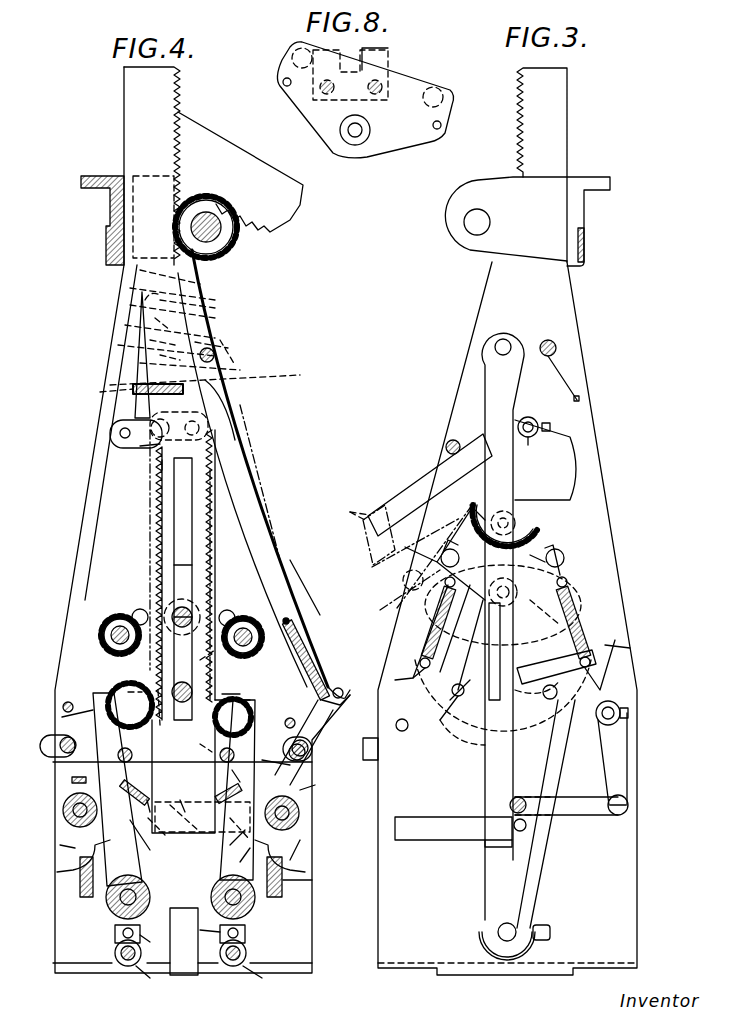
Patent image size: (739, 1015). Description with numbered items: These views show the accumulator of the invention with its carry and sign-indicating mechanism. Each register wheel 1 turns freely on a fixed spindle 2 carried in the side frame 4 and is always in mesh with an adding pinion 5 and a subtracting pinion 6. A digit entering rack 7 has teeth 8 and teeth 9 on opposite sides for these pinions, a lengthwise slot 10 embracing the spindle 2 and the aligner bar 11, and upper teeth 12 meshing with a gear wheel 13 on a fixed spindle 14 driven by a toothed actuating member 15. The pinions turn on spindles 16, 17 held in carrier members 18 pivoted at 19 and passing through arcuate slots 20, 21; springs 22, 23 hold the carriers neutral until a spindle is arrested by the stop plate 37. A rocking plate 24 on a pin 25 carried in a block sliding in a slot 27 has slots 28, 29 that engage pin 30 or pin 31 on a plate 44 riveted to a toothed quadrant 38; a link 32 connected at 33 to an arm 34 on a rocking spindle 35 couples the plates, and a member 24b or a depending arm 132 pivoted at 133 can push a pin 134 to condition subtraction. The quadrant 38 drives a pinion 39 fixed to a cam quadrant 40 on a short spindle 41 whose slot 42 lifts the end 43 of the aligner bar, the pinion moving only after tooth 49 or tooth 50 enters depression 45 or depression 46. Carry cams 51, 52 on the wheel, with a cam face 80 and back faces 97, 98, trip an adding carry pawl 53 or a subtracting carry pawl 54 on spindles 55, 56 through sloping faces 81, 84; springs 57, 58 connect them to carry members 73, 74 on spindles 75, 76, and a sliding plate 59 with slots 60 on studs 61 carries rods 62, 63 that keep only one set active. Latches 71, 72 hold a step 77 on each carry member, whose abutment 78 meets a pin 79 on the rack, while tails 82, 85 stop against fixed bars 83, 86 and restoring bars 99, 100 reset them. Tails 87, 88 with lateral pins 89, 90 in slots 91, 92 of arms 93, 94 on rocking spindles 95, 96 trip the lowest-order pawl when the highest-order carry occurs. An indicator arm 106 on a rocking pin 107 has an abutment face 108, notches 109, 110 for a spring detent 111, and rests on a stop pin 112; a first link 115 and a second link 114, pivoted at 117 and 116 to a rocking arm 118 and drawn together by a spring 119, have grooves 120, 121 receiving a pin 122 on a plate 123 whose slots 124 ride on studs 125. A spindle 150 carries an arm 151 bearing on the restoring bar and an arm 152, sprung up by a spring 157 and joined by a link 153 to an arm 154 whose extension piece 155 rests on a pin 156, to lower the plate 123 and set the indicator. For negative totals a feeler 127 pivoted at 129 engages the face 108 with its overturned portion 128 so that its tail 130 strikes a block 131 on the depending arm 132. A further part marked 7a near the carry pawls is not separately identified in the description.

In FIG. 4, the pin 1 is at (230, 691).
In FIG. 4, the pin 2 is at (188, 701).
In FIG. 4, the lever 4 is at (240, 511).
In FIG. 3, the lever 4 is at (590, 486).
In FIG. 4, the gear 5 is at (262, 638).
In FIG. 4, the gear 6 is at (112, 626).
In FIG. 4, the bracket 7 is at (165, 469).
In FIG. 3, the bracket 7 is at (530, 169).
In FIG. 4, the spring 7a is at (238, 795).
In FIG. 4, the rack 8 is at (216, 487).
In FIG. 4, the rack 9 is at (155, 496).
In FIG. 4, the slide bar 10 is at (180, 517).
In FIG. 4, the pin 11 is at (192, 611).
In FIG. 4, the rack 12 is at (165, 82).
In FIG. 3, the rack 12 is at (520, 73).
In FIG. 4, the shaft 13 is at (212, 242).
In FIG. 4, the gear 14 is at (222, 238).
In FIG. 4, the plate 15 is at (230, 157).
In FIG. 4, the shaft 16 is at (250, 631).
In FIG. 8, the shaft 16 is at (440, 89).
In FIG. 3, the shaft 16 is at (452, 693).
In FIG. 4, the shaft 17 is at (110, 637).
In FIG. 8, the shaft 17 is at (296, 53).
In FIG. 3, the shaft 17 is at (590, 657).
In FIG. 8, the plate 18 is at (318, 127).
In FIG. 3, the plate 18 is at (420, 673).
In FIG. 8, the bushing 19 is at (362, 132).
In FIG. 4, the pawl 20 is at (232, 614).
In FIG. 4, the pawl 21 is at (140, 610).
In FIG. 3, the spring 22 is at (428, 643).
In FIG. 3, the spring 23 is at (575, 609).
In FIG. 3, the lever 24 is at (525, 896).
In FIG. 3, the bar 24b is at (416, 831).
In FIG. 3, the roller 25 is at (498, 934).
In FIG. 4, the stop 27 is at (175, 965).
In FIG. 3, the stop 27 is at (520, 963).
In FIG. 3, the pin 28 is at (558, 693).
In FIG. 3, the cam 29 is at (537, 698).
In FIG. 3, the cam 30 is at (458, 701).
In FIG. 3, the link 31 is at (548, 691).
In FIG. 3, the bar 32 is at (562, 809).
In FIG. 3, the pin 33 is at (618, 816).
In FIG. 3, the link 34 is at (605, 781).
In FIG. 4, the pivot 35 is at (63, 707).
In FIG. 3, the pivot 35 is at (620, 711).
In FIG. 8, the notch 37 is at (385, 51).
In FIG. 3, the pin 38 is at (568, 584).
In FIG. 3, the shaft 39 is at (518, 521).
In FIG. 3, the pawl 40 is at (565, 559).
In FIG. 3, the gear 41 is at (533, 516).
In FIG. 3, the pawl 42 is at (560, 551).
In FIG. 3, the cam 43 is at (540, 623).
In FIG. 3, the pin 44 is at (417, 718).
In FIG. 3, the pawl 45 is at (448, 549).
In FIG. 3, the shaft 46 is at (517, 596).
In FIG. 3, the gear 49 is at (475, 516).
In FIG. 3, the gear 50 is at (546, 546).
In FIG. 4, the pawl 51 is at (164, 694).
In FIG. 4, the gear 52 is at (128, 683).
In FIG. 4, the slot 53 is at (290, 767).
In FIG. 4, the link 54 is at (78, 722).
In FIG. 4, the roller 55 is at (250, 908).
In FIG. 4, the roller 56 is at (110, 908).
In FIG. 4, the pin 57 is at (244, 771).
In FIG. 4, the spring 58 is at (135, 786).
In FIG. 4, the stop 59 is at (321, 794).
In FIG. 3, the stop 59 is at (378, 751).
In FIG. 4, the slot 60 is at (42, 746).
In FIG. 4, the pin 61 is at (65, 739).
In FIG. 4, the pin 62 is at (222, 758).
In FIG. 4, the pin 63 is at (132, 756).
In FIG. 4, the arm 71 is at (238, 866).
In FIG. 4, the arm 72 is at (150, 800).
In FIG. 4, the arm 73 is at (222, 851).
In FIG. 4, the arm 74 is at (140, 851).
In FIG. 4, the arm 75 is at (300, 857).
In FIG. 4, the roller 76 is at (63, 810).
In FIG. 4, the link 77 is at (199, 842).
In FIG. 4, the spring 78 is at (194, 795).
In FIG. 4, the plate 79 is at (180, 835).
In FIG. 4, the pin 80 is at (258, 689).
In FIG. 4, the bar 81 is at (256, 704).
In FIG. 4, the block 82 is at (284, 882).
In FIG. 4, the ledge 83 is at (290, 897).
In FIG. 4, the bar 84 is at (95, 700).
In FIG. 4, the arm 85 is at (65, 853).
In FIG. 4, the block 86 is at (80, 890).
In FIG. 4, the block 87 is at (245, 932).
In FIG. 4, the block 88 is at (115, 930).
In FIG. 4, the pin 89 is at (198, 932).
In FIG. 4, the pin 90 is at (154, 941).
In FIG. 4, the pin 91 is at (238, 937).
In FIG. 4, the pin 92 is at (123, 936).
In FIG. 4, the arm 93 is at (260, 981).
In FIG. 4, the arm 94 is at (148, 981).
In FIG. 4, the roller 95 is at (230, 966).
In FIG. 4, the roller 96 is at (118, 963).
In FIG. 4, the lever 97 is at (305, 728).
In FIG. 4, the gear 98 is at (130, 705).
In FIG. 4, the roller 99 is at (298, 820).
In FIG. 4, the stop 100 is at (72, 781).
In FIG. 3, the bar 106 is at (425, 481).
In FIG. 4, the pin 107 is at (168, 439).
In FIG. 3, the pin 107 is at (529, 449).
In FIG. 3, the bar 108 is at (388, 506).
In FIG. 3, the pivot 109 is at (545, 448).
In FIG. 3, the stop 110 is at (547, 432).
In FIG. 3, the pin 111 is at (556, 351).
In FIG. 3, the pin 112 is at (446, 446).
In FIG. 4, the lever 114 is at (218, 371).
In FIG. 4, the spring 115 is at (133, 383).
In FIG. 4, the link 116 is at (205, 424).
In FIG. 4, the link 117 is at (118, 434).
In FIG. 4, the pin 118 is at (145, 448).
In FIG. 4, the lever 119 is at (138, 396).
In FIG. 4, the lever 120 is at (205, 311).
In FIG. 4, the pin 121 is at (140, 306).
In FIG. 4, the lever 122 is at (140, 284).
In FIG. 4, the pin 123 is at (215, 357).
In FIG. 4, the spring 124 is at (215, 393).
In FIG. 4, the pin 125 is at (214, 297).
In FIG. 3, the axis 127 is at (395, 606).
In FIG. 4, the link 128 is at (341, 508).
In FIG. 3, the link 128 is at (343, 507).
In FIG. 3, the pivot 129 is at (405, 584).
In FIG. 3, the cam 130 is at (475, 731).
In FIG. 3, the slot 131 is at (500, 656).
In FIG. 3, the bar 132 is at (500, 485).
In FIG. 3, the pin 133 is at (508, 341).
In FIG. 3, the pin 134 is at (522, 832).
In FIG. 4, the pin 150 is at (296, 722).
In FIG. 4, the lever 151 is at (306, 752).
In FIG. 4, the pin 152 is at (330, 680).
In FIG. 4, the lever 153 is at (290, 581).
In FIG. 4, the link 154 is at (140, 359).
In FIG. 4, the link 155 is at (140, 325).
In FIG. 4, the link 156 is at (140, 343).
In FIG. 4, the spring 157 is at (310, 660).